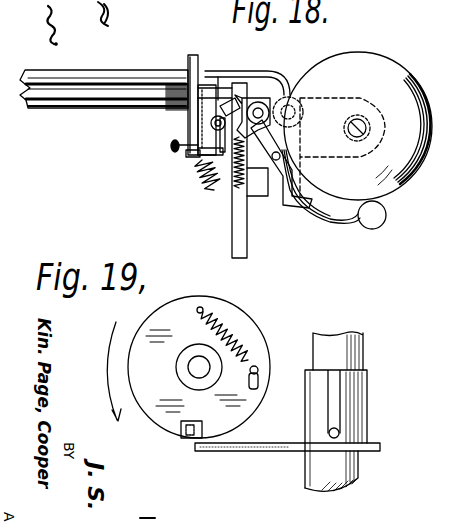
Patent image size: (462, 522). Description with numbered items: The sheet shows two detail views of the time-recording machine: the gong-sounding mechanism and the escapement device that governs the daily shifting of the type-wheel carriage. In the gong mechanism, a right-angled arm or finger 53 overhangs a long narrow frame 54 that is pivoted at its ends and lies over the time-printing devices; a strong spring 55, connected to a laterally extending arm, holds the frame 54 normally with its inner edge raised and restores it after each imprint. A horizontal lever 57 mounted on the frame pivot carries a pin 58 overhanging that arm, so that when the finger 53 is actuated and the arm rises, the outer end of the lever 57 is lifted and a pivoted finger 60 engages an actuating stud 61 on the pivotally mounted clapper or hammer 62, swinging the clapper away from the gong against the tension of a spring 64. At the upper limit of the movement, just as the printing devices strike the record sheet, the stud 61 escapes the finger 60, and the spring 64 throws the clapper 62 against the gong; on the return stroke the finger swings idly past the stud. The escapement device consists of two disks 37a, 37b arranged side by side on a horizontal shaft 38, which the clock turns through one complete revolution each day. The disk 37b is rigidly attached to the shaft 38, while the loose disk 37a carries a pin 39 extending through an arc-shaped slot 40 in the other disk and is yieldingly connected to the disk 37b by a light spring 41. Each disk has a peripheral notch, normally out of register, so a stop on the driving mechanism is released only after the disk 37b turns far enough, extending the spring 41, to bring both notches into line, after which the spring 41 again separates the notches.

In FIG. 18, the frame 54 is at (156, 78).
In FIG. 18, the pin 58 is at (200, 87).
In FIG. 18, the right-angled arm or lever (finger) 53 is at (218, 75).
In FIG. 18, the pivoted finger 60 is at (226, 106).
In FIG. 18, the actuating stud 61 is at (291, 98).
In FIG. 18, the clapper or hammer 62 is at (328, 221).
In FIG. 18, the horizontal lever 57 is at (196, 131).
In FIG. 18, the strong spring 55 is at (198, 163).
In FIG. 18, the spring 64 is at (237, 186).
In FIG. 19, the escapement disk 37b is at (156, 417).
In FIG. 19, the loose escapement disk 37a is at (185, 438).
In FIG. 19, the horizontal shaft 38 is at (197, 368).
In FIG. 19, the pin 39 is at (257, 365).
In FIG. 19, the arc-shaped slot 40 is at (257, 390).
In FIG. 19, the light spring 41 is at (226, 328).